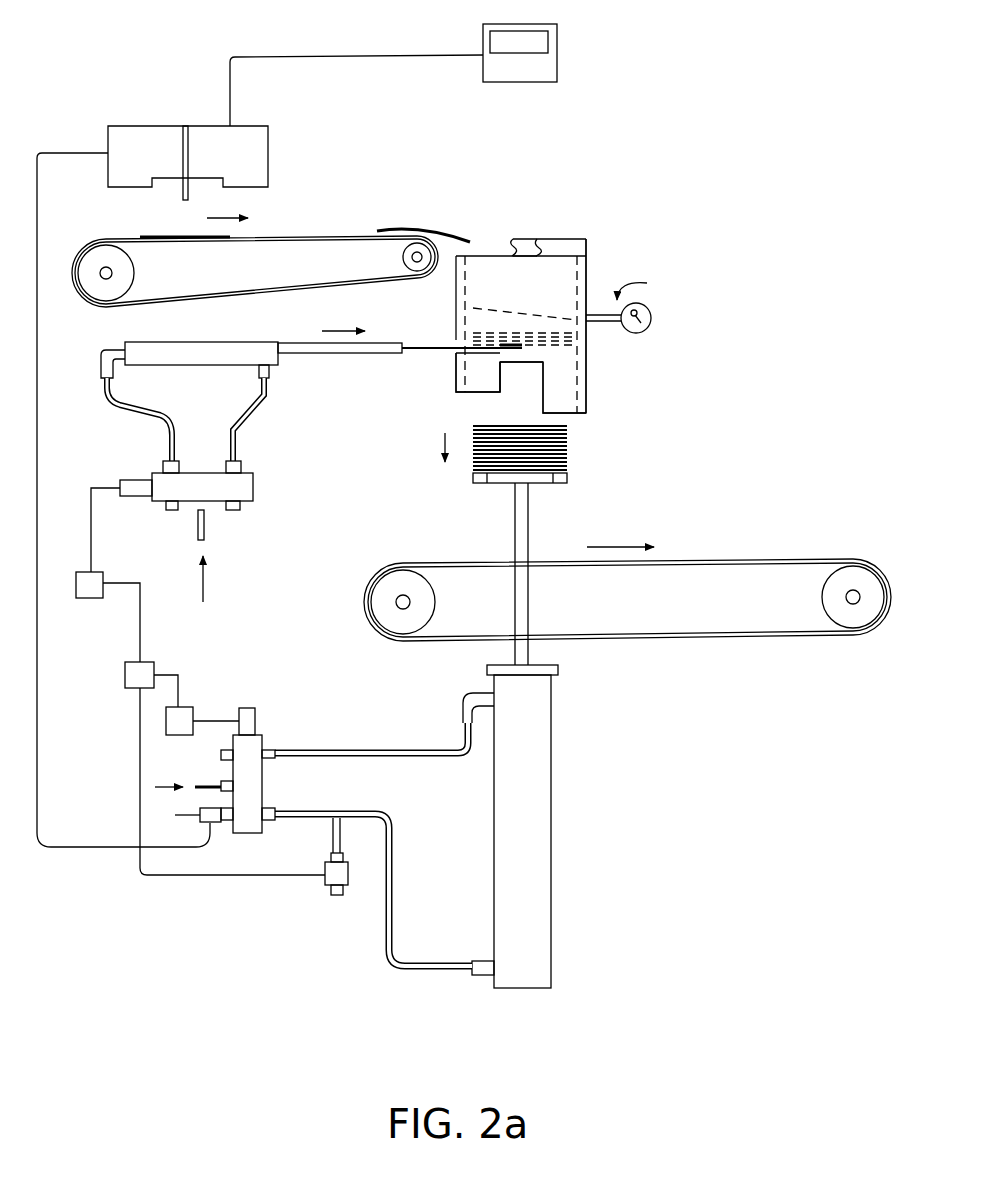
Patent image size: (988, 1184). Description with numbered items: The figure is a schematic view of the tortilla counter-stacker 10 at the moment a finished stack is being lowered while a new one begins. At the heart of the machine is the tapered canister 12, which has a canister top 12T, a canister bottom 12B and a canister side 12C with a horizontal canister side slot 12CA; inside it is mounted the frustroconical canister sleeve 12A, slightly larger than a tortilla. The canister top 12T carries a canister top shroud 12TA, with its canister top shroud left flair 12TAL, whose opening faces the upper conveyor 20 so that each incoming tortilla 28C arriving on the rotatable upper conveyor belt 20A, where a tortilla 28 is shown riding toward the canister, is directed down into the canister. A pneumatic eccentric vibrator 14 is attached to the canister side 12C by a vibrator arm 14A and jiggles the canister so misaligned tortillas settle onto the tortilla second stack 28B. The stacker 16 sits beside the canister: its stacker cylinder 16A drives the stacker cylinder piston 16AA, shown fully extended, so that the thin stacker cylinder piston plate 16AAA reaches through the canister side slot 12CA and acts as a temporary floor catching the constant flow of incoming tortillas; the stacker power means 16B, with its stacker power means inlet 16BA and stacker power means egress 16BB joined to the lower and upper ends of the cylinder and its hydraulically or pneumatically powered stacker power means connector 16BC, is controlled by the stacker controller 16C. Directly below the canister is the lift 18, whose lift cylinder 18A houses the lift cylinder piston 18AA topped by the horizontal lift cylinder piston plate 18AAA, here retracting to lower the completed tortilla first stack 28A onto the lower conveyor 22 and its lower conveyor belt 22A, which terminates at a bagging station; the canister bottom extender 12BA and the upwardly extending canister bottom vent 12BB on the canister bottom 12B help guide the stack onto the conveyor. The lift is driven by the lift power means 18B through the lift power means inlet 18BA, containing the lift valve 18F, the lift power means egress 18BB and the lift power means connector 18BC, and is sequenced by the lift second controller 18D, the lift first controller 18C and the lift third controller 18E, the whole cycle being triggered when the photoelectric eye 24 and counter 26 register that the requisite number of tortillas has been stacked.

The tortilla counter-stacker 10 is at (355, 34).
The canister 12 is at (555, 295).
The canister sleeve 12A is at (586, 295).
The canister bottom 12B is at (492, 392).
The canister bottom extender 12BA is at (568, 405).
The canister bottom vent 12BB is at (533, 370).
The canister side 12C is at (586, 383).
The canister side slot 12CA is at (456, 356).
The canister top 12T is at (535, 239).
The canister top shroud 12TA is at (583, 238).
The canister top shroud left flair 12TAL is at (513, 239).
The vibrator 14 is at (651, 320).
The vibrator arm 14A is at (642, 285).
The stacker 16 is at (285, 477).
The stacker cylinder 16A is at (170, 341).
The stacker cylinder piston 16AA is at (375, 355).
The stacker cylinder piston plate 16AAA is at (432, 305).
The stacker power means 16B is at (253, 490).
The stacker power means inlet 16BA is at (116, 410).
The stacker power means egress 16BB is at (238, 431).
The stacker power means connector 16BC is at (205, 525).
The stacker controller 16C is at (90, 598).
The lift 18 is at (376, 730).
The lift cylinder 18A is at (530, 705).
The lift cylinder piston 18AA is at (528, 540).
The lift cylinder piston plate 18AAA is at (500, 483).
The lift power means 18B is at (240, 833).
The lift power means inlet 18BA is at (386, 930).
The lift power means egress 18BB is at (318, 748).
The lift power means connector 18BC is at (210, 785).
The lift first controller 18C is at (140, 661).
The lift second controller 18D is at (180, 706).
The lift third controller 18E is at (213, 813).
The lift valve 18F is at (325, 880).
The upper conveyor 20 is at (255, 231).
The upper conveyor belt 20A is at (338, 238).
The lower conveyor 22 is at (627, 572).
The outfeed conveyor belt 22A is at (775, 562).
The photoelectric eye 24 is at (158, 122).
The counter 26 is at (503, 22).
The sheet 28 is at (158, 235).
The tortilla first stack 28A is at (571, 448).
The tortilla second stack 28B is at (576, 343).
The incoming tortilla 28C is at (420, 230).